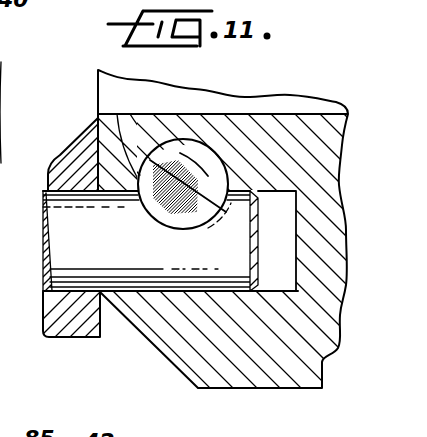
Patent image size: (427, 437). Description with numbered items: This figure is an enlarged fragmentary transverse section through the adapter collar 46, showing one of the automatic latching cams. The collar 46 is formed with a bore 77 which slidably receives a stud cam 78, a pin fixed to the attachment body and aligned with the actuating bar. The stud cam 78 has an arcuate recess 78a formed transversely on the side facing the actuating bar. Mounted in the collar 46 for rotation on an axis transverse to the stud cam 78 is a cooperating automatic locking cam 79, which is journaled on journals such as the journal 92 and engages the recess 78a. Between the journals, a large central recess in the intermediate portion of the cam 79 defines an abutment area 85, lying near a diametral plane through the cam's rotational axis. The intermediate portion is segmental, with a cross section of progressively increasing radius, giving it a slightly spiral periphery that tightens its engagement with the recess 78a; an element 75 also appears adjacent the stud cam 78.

The adapter collar 46 is at (280, 394).
The journal 92 is at (98, 118).
The stud cam 78 is at (44, 262).
The arcuate recess 78a is at (150, 205).
The bore 77 is at (284, 282).
The retainer block 75 is at (38, 331).
The automatic locking cam 79 is at (209, 132).
The abutment area 85 is at (188, 212).